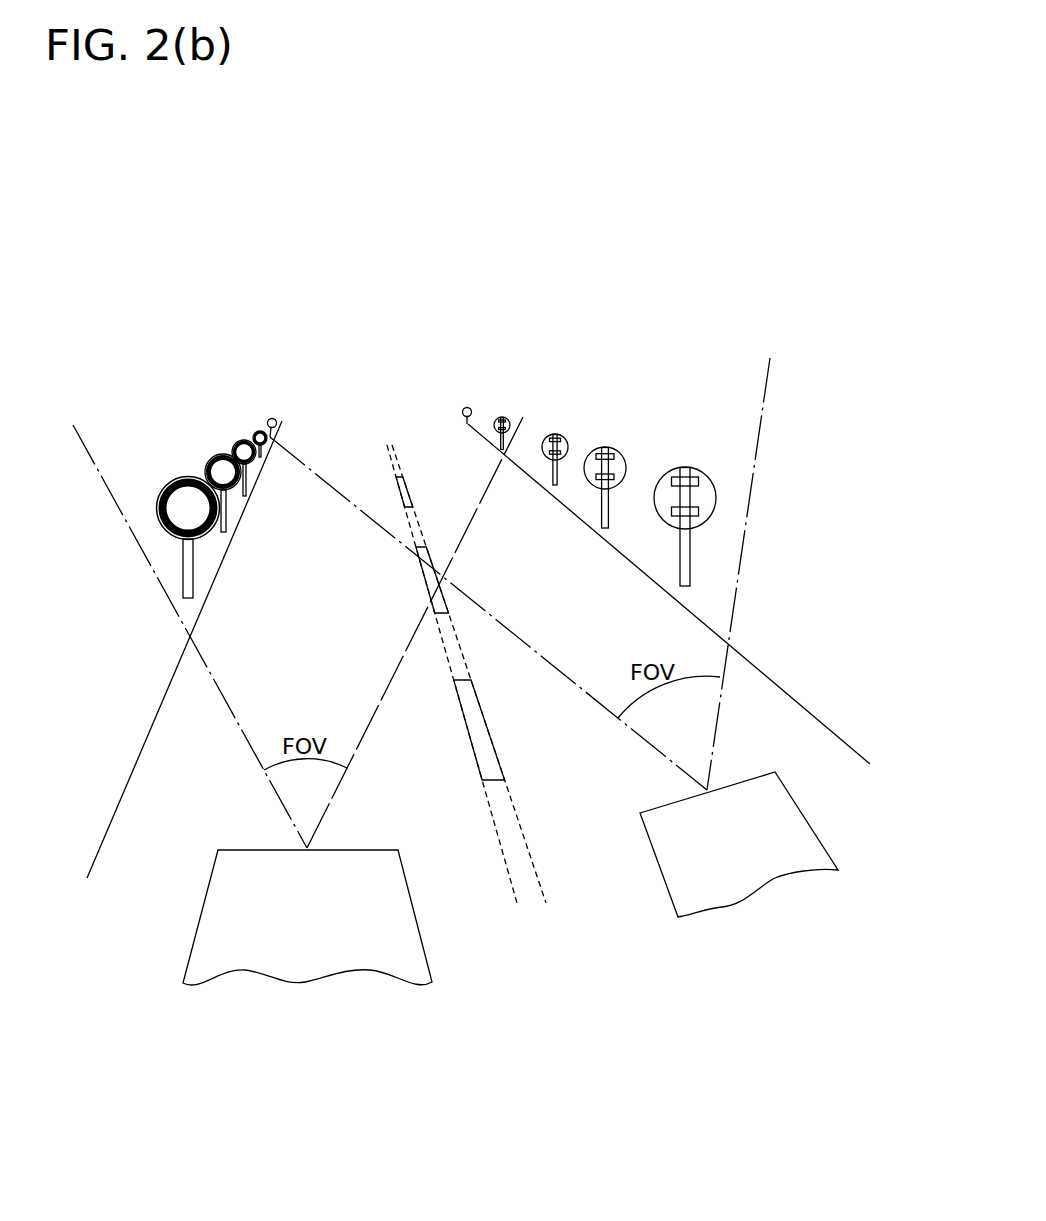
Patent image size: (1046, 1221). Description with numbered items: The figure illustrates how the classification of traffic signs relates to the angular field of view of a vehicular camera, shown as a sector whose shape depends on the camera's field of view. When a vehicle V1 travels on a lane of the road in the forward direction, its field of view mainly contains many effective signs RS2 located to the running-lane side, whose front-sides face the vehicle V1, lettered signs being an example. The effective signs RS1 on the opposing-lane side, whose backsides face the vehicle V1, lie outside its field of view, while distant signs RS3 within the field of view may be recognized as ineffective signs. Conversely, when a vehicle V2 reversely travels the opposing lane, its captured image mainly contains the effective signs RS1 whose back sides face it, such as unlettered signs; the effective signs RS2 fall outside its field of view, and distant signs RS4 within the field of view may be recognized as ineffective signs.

The effective signs located to the opposing-lane side RS1 is at (732, 472).
The effective signs located to the running-lane side RS2 is at (244, 428).
The ineffective signs RS3 is at (515, 412).
The ineffective signs RS4 is at (281, 409).
The vehicle travelling in the forward direction V1 is at (327, 955).
The vehicle reversely travelling the opposing lane V2 is at (728, 885).